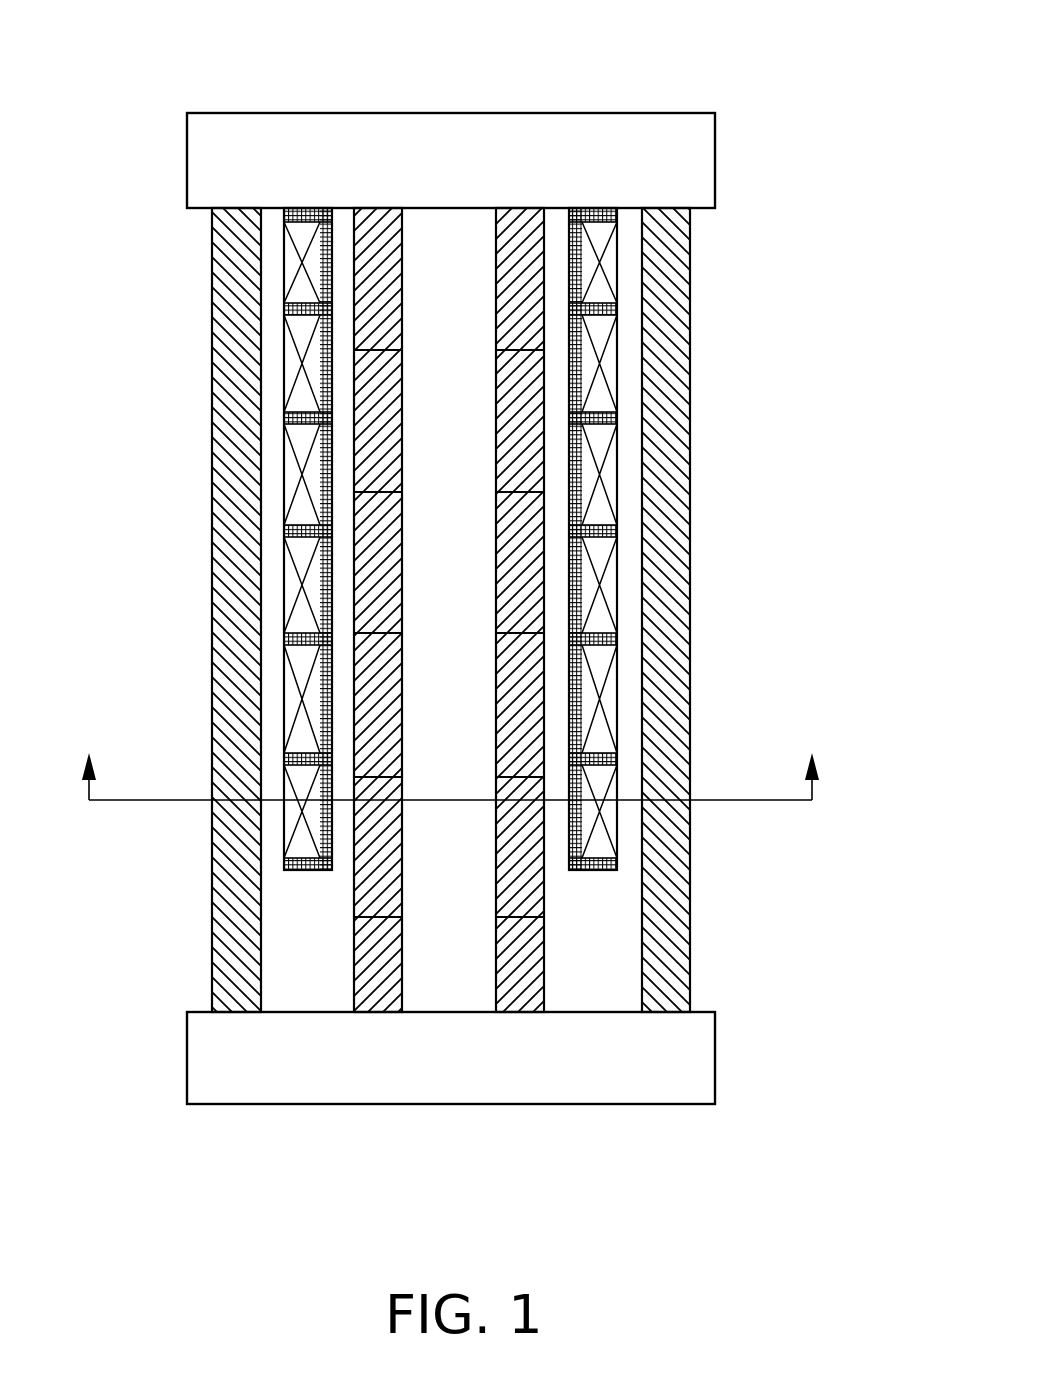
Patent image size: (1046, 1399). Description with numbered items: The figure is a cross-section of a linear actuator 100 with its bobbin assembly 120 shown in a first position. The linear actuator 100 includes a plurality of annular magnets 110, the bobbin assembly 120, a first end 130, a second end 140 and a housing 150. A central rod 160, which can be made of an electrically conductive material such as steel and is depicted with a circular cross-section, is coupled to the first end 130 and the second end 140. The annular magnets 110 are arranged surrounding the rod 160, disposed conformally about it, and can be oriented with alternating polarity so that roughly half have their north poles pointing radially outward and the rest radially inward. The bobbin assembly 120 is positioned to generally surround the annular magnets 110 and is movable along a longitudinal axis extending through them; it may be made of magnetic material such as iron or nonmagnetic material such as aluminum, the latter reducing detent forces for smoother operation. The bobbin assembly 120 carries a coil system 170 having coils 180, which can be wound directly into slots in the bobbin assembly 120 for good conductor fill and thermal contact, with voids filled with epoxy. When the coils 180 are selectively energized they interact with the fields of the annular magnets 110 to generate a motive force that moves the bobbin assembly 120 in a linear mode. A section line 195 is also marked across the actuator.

The linear actuator 100 is at (550, 48).
The annular magnets 110 is at (355, 627).
The bobbin assembly 120 is at (287, 872).
The first end 130 is at (715, 158).
The second end 140 is at (715, 1057).
The housing 150 is at (212, 350).
The rod 160 is at (473, 973).
The coil system 170 is at (262, 270).
The coils 180 is at (287, 480).
The section line 195 is at (450, 752).